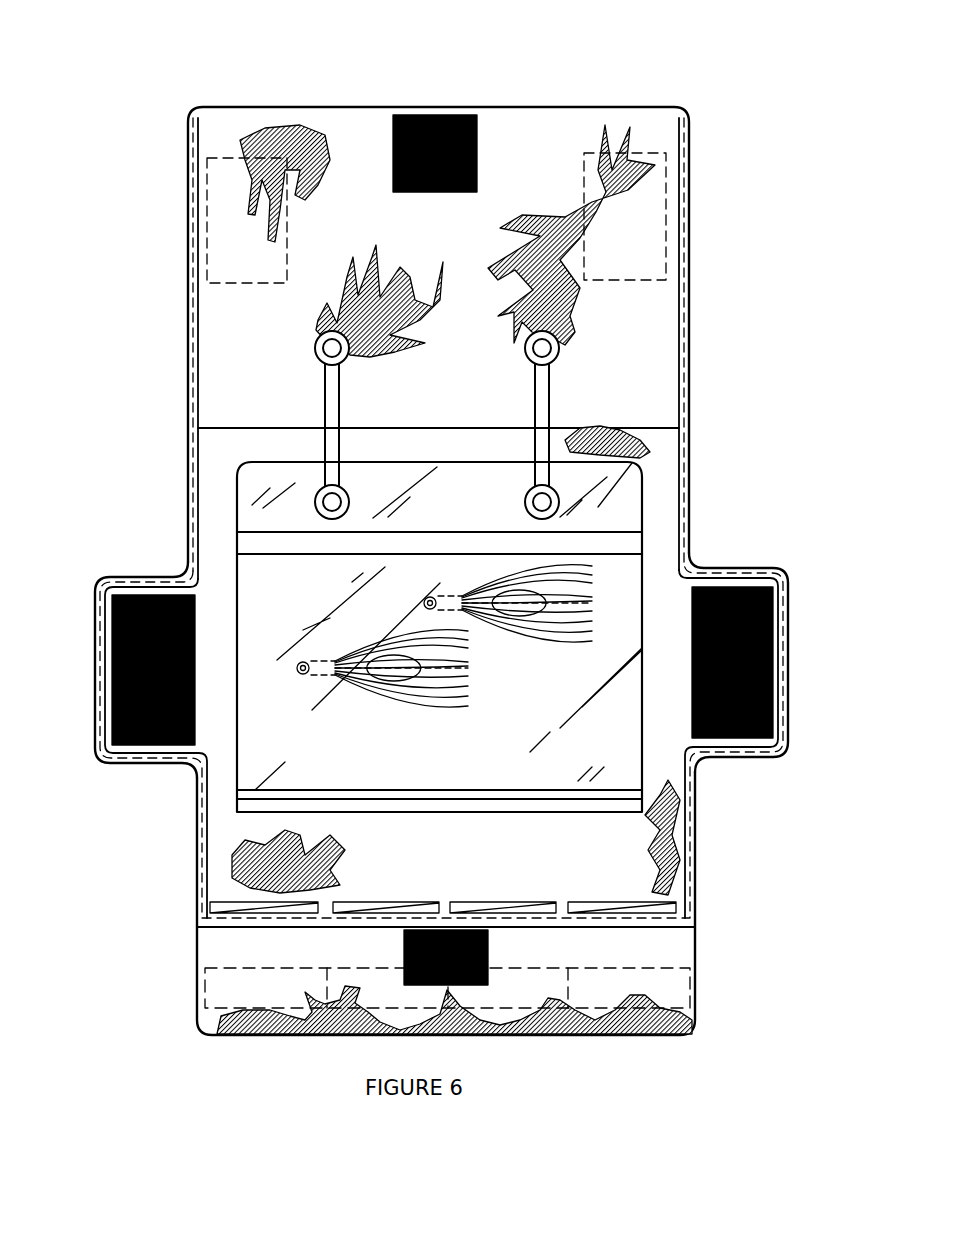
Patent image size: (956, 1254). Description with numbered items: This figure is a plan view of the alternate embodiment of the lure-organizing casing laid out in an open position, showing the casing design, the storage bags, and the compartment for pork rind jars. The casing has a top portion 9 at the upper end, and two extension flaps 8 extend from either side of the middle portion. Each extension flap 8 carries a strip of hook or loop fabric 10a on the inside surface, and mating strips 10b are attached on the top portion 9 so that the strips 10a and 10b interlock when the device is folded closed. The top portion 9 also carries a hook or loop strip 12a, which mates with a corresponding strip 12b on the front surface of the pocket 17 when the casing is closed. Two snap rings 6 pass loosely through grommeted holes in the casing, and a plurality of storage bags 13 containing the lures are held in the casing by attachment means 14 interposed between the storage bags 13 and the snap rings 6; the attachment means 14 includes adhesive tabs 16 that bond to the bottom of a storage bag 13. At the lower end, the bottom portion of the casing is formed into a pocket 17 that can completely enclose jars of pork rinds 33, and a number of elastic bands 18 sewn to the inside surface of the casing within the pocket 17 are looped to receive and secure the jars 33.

The snap rings 6 is at (550, 403).
The extension flaps 8 is at (97, 585).
The top portion 9 is at (328, 152).
The strip of hook or loop fabric 10a is at (112, 672).
The mating strips 10b is at (232, 188).
The hook or loop strip 12a is at (440, 113).
The mating strip 12b is at (407, 982).
The storage bags 13 is at (280, 762).
The attachment means 14 is at (600, 500).
The tabs 16 is at (600, 537).
The pocket 17 is at (248, 948).
The elastic bands 18 is at (205, 980).
The pork rind jars 33 is at (670, 897).